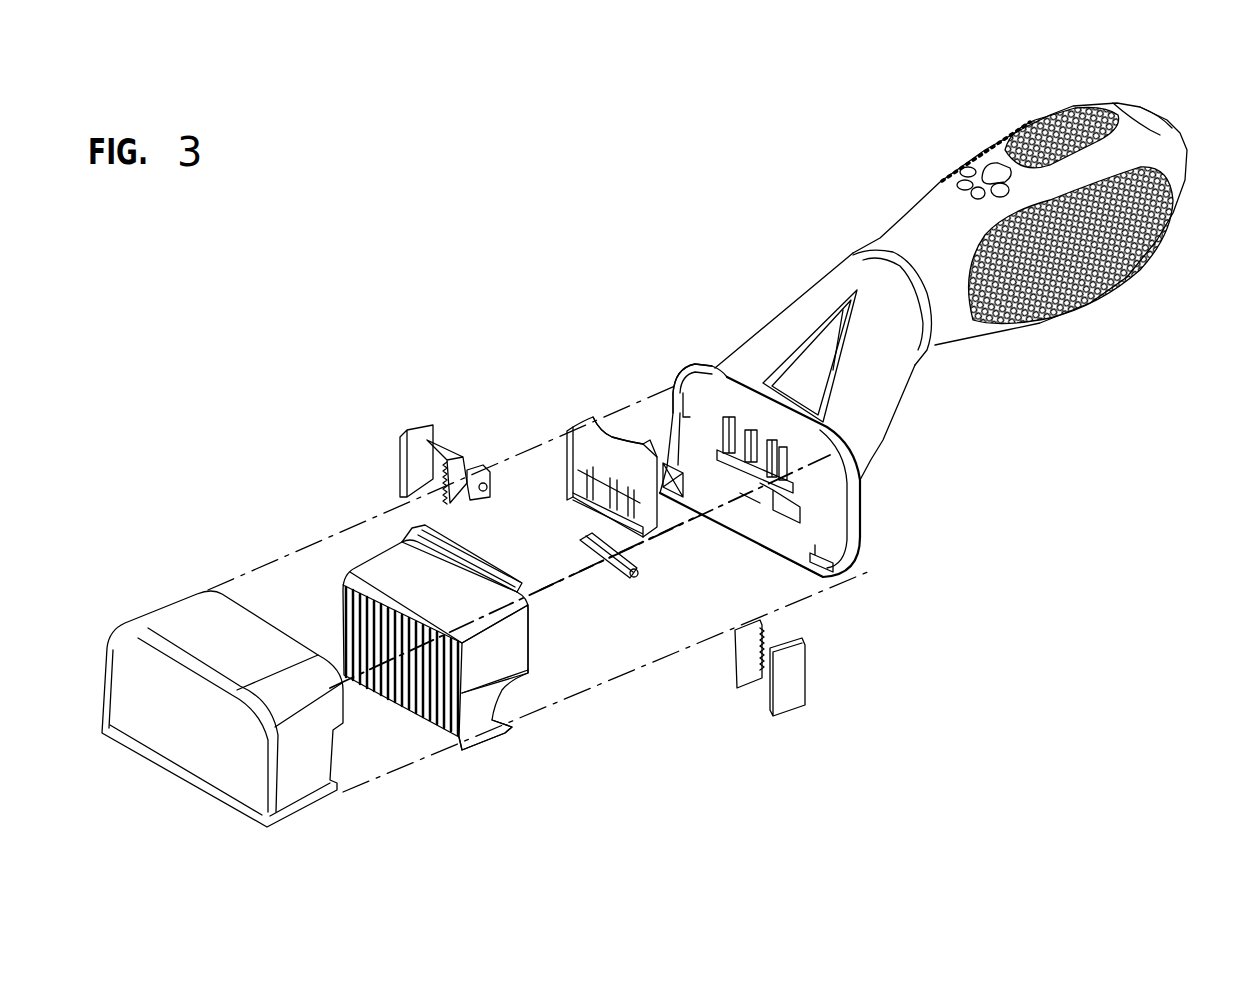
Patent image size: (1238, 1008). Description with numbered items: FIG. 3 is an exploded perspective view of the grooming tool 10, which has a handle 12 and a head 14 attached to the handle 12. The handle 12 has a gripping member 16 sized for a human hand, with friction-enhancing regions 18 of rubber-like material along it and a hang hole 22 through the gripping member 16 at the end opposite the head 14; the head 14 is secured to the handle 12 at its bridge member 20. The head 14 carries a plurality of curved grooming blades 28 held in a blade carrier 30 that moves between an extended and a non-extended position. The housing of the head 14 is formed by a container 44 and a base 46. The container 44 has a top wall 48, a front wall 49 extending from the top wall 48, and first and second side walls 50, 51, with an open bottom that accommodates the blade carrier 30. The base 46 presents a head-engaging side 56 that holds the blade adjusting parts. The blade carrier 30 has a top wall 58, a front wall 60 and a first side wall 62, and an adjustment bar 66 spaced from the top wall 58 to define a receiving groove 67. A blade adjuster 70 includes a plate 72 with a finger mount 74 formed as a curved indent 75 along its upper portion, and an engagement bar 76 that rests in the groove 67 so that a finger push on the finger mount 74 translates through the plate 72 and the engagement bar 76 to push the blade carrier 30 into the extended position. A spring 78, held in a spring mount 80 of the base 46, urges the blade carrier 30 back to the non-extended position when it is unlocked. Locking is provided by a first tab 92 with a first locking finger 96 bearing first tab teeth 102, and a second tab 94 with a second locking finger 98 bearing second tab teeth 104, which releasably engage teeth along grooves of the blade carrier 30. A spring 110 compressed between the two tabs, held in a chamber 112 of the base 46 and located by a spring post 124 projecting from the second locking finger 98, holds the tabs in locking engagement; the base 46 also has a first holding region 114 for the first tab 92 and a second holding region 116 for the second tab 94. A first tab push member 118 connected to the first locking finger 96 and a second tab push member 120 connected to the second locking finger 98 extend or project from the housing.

The grooming tool 10 is at (598, 118).
The handle 12 is at (942, 114).
The head 14 is at (640, 315).
The gripping member 16 is at (1017, 122).
The friction-enhancing regions 18 is at (1070, 120).
The bridge member 20 is at (883, 421).
The hang hole 22 is at (1163, 125).
The grooming blades 28 is at (458, 740).
The blade carrier 30 is at (577, 677).
The container 44 is at (108, 602).
The base 46 is at (853, 477).
The top wall 48 is at (177, 630).
The front wall 49 is at (187, 770).
The first side wall 50 is at (293, 793).
The second side wall 51 is at (103, 680).
The head-engaging side 56 is at (827, 530).
The top wall 58 is at (397, 567).
The front wall 60 is at (357, 580).
The first side wall 62 is at (527, 647).
The adjustment bar 66 is at (460, 547).
The receiving groove 67 is at (483, 580).
The blade adjuster 70 is at (590, 427).
The plate 72 is at (587, 450).
The finger mount 74 is at (613, 427).
The curved indent 75 is at (623, 430).
The engagement bar 76 is at (580, 503).
The spring 78 is at (673, 507).
The spring mount 80 is at (760, 447).
The first tab 92 is at (748, 719).
The second tab 94 is at (452, 436).
The first locking finger 96 is at (733, 663).
The second locking finger 98 is at (463, 453).
The first tab teeth 102 is at (750, 680).
The second tab teeth 104 is at (442, 487).
The spring 110 is at (610, 577).
The chamber 112 is at (767, 510).
The first holding region 114 is at (803, 560).
The second holding region 116 is at (697, 450).
The first tab push member 118 is at (800, 680).
The second tab push member 120 is at (403, 458).
The spring post 124 is at (490, 488).